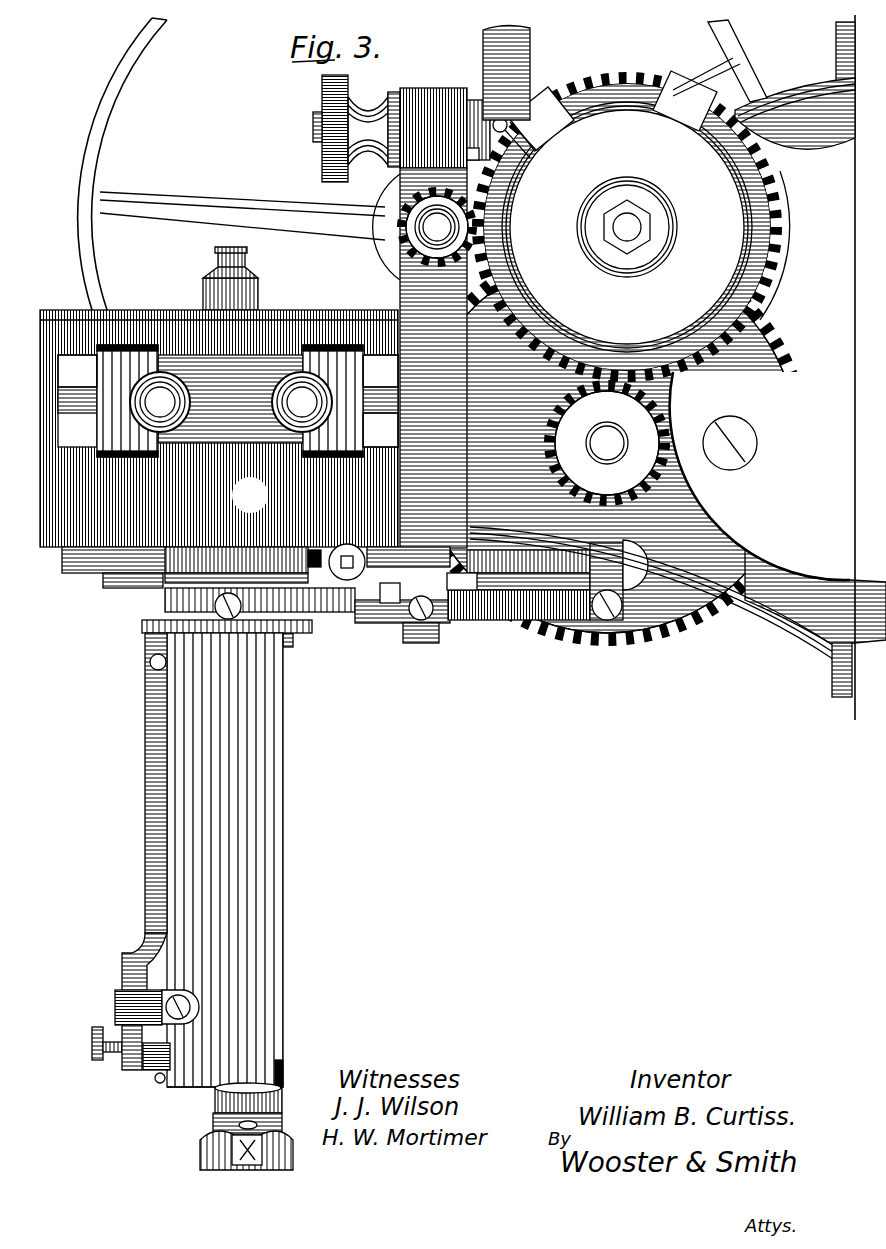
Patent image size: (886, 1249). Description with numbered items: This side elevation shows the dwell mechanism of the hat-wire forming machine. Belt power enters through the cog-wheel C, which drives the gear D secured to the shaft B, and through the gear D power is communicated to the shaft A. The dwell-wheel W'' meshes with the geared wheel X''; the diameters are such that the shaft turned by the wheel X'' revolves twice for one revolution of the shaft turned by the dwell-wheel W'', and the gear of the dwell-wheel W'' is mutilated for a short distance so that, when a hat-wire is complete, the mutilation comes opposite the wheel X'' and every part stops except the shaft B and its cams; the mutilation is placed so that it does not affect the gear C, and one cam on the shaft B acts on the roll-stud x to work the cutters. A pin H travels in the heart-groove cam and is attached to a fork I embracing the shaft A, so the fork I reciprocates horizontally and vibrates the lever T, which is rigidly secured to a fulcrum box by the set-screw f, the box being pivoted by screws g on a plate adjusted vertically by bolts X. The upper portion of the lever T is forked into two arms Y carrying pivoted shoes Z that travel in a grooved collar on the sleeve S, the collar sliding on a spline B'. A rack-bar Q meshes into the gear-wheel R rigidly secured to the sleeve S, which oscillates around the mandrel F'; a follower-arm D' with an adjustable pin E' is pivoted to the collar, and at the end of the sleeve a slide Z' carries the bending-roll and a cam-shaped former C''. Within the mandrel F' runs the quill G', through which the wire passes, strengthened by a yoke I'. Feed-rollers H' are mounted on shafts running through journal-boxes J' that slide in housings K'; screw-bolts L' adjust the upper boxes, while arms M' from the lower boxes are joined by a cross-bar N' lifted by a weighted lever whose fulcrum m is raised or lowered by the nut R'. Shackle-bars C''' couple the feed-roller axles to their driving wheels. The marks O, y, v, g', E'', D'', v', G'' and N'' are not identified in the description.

The nut R' is at (350, 121).
The mandrel F' is at (242, 201).
The cog-wheel C is at (415, 224).
The housings K' is at (219, 411).
The yoke I' is at (240, 278).
The fulcrum m is at (478, 96).
The arm O is at (508, 12).
The gear D is at (627, 204).
The dwell-wheel W'' is at (627, 202).
The shaft B is at (627, 227).
The screw-bolts L' is at (71, 371).
The journal-boxes J' is at (226, 401).
The arms M' is at (380, 371).
The feed-rollers H' is at (380, 430).
The geared wheel X'' is at (603, 443).
The shaft A is at (607, 443).
The quill G' is at (778, 508).
The pin H is at (307, 563).
The rack-bar Q is at (137, 563).
The gear-wheel R is at (225, 621).
The bolts X is at (392, 630).
The screw y is at (410, 625).
The set-screw f is at (420, 645).
The lever T is at (510, 600).
The fork I is at (615, 580).
The screws g is at (452, 649).
The pin v is at (437, 680).
The arms Y is at (325, 612).
The pin g' is at (303, 656).
The spline B' is at (286, 665).
The slide Z' is at (227, 654).
The sleeve S is at (225, 860).
The follower-arm D' is at (135, 813).
The clamp E'' is at (137, 984).
The knob D'' is at (105, 1025).
The former C'' is at (149, 1051).
The adjustable pin E' is at (132, 1081).
The shoes Z is at (148, 1109).
The pin v' is at (179, 1103).
The cross-bar N' is at (278, 1059).
The collar G'' is at (260, 1094).
The foot N'' is at (244, 1158).
The roll-stud x is at (248, 1162).
The shackle-bars C''' is at (275, 1187).